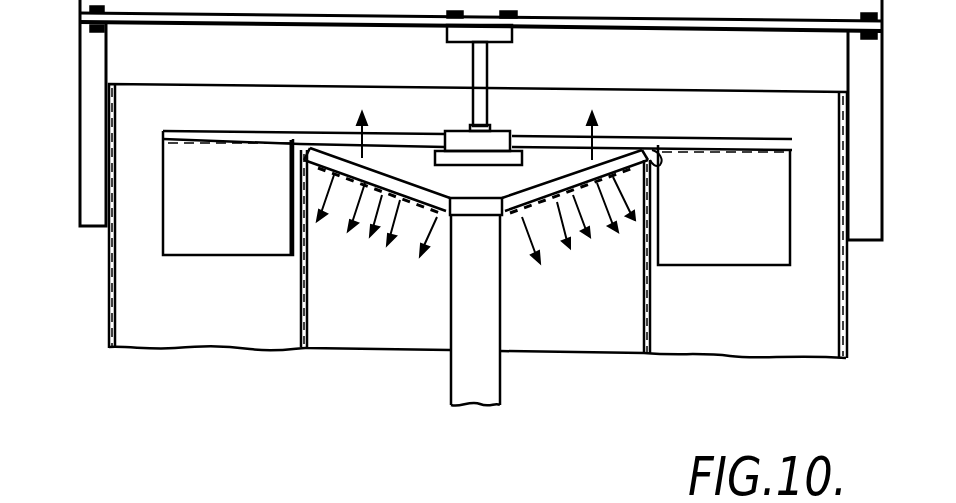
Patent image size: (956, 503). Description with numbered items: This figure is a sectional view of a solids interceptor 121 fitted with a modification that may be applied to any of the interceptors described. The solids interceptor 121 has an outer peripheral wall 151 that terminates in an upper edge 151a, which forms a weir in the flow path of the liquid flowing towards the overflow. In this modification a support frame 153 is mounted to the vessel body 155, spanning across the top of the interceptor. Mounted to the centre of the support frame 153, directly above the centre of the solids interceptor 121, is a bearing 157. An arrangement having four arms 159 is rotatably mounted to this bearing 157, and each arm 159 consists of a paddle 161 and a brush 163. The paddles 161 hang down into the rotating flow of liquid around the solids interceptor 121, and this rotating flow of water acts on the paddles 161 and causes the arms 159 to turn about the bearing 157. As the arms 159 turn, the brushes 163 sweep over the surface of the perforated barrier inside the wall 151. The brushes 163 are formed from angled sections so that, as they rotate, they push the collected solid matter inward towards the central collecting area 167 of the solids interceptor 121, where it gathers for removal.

The solids interceptor 121 is at (98, 342).
The outer peripheral wall 151 is at (648, 318).
The upper edge 151a is at (666, 162).
The support frame 153 is at (80, 204).
The vessel body 155 is at (109, 312).
The bearing 157 is at (470, 142).
The arms 159 is at (325, 142).
The paddle 161 is at (230, 240).
The brush 163 is at (366, 166).
The central collecting area 167 is at (498, 193).